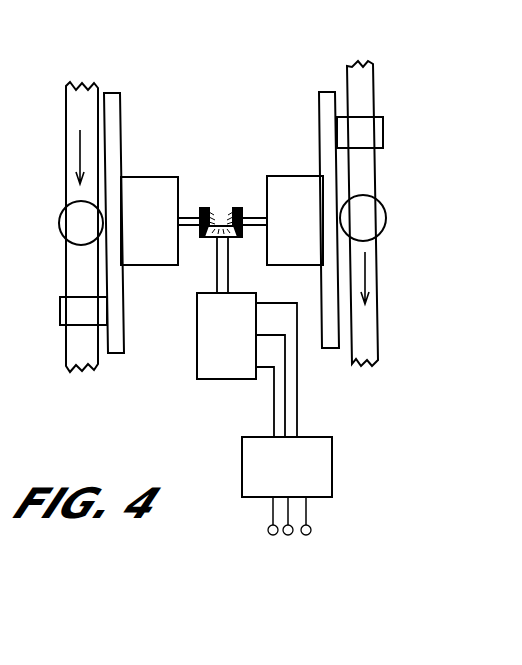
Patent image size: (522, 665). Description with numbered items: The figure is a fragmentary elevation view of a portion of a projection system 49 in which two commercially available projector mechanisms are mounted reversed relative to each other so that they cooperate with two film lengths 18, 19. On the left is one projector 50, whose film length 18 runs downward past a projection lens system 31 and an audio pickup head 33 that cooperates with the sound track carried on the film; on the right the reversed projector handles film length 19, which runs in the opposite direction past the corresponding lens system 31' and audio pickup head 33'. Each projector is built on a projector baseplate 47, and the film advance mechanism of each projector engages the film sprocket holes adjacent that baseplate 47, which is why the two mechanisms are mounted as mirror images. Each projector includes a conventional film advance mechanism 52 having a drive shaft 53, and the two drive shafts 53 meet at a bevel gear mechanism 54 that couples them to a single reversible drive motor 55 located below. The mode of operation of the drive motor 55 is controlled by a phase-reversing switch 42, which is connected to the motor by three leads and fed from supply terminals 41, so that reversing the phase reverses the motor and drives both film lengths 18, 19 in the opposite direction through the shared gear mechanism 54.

The film length 18 is at (67, 103).
The film length 19 is at (374, 84).
The projection lens system 31 is at (59, 231).
The projection lens system 31' is at (397, 218).
The audio pickup head 33 is at (62, 320).
The audio pickup head 33' is at (398, 132).
The power supply terminals 41 is at (270, 537).
The phase-reversing switch 42 is at (332, 447).
The projector baseplate 47 is at (121, 108).
The projection system 49 is at (258, 76).
The projector 50 is at (57, 213).
The film advance mechanism 52 is at (138, 177).
The drive shaft 53 is at (192, 216).
The bevel gear mechanism 54 is at (221, 208).
The reversible drive motor 55 is at (205, 356).